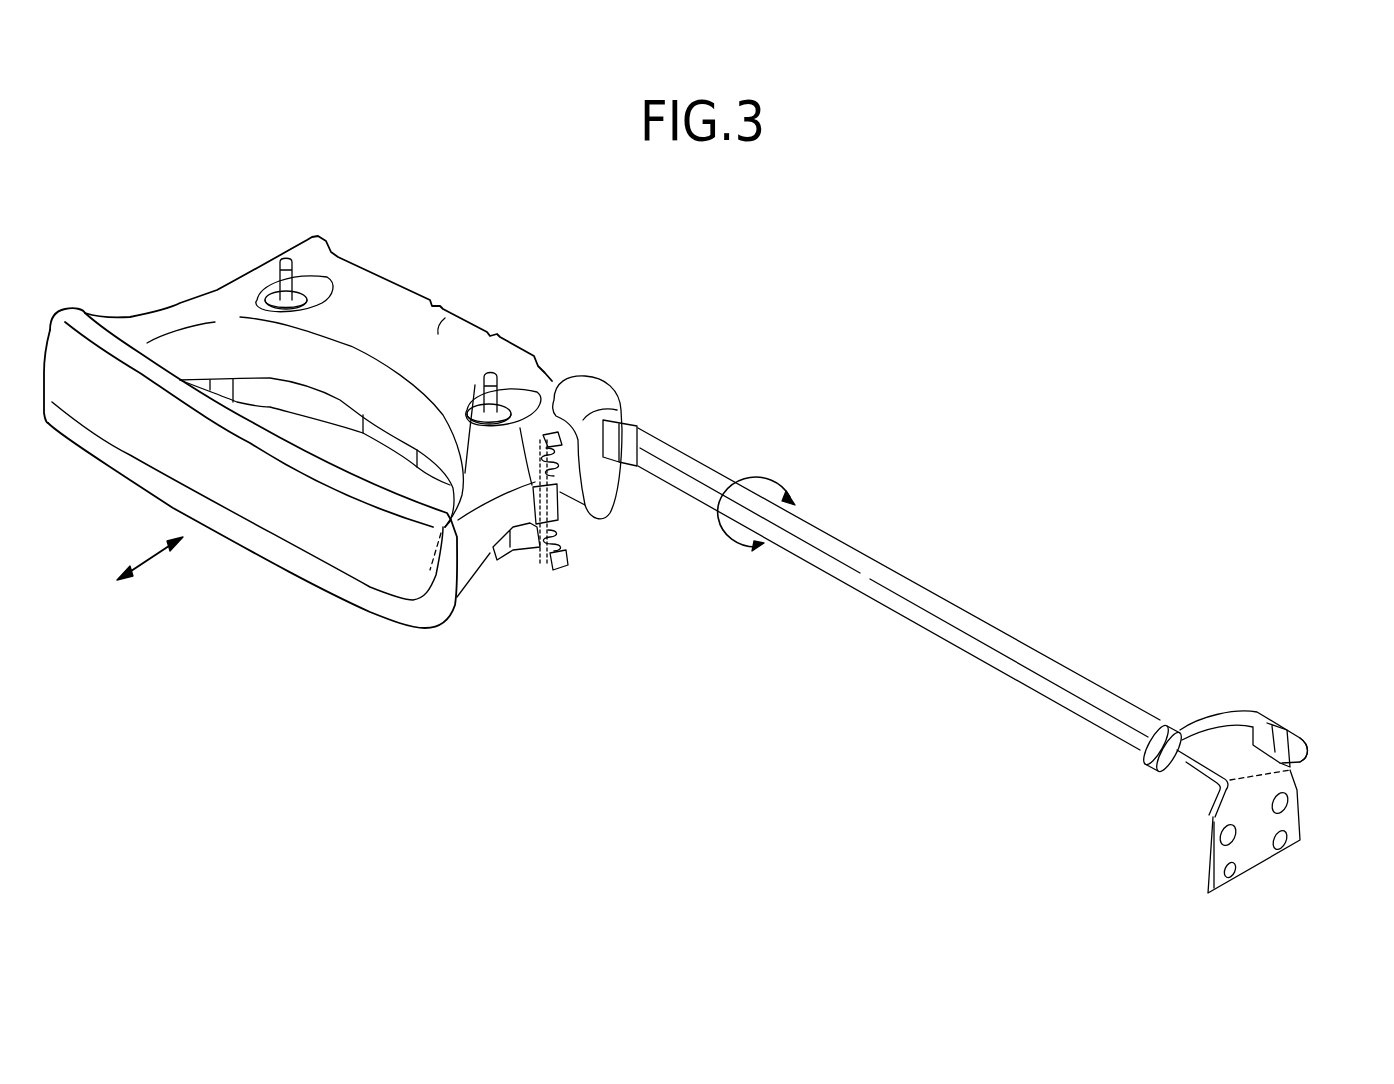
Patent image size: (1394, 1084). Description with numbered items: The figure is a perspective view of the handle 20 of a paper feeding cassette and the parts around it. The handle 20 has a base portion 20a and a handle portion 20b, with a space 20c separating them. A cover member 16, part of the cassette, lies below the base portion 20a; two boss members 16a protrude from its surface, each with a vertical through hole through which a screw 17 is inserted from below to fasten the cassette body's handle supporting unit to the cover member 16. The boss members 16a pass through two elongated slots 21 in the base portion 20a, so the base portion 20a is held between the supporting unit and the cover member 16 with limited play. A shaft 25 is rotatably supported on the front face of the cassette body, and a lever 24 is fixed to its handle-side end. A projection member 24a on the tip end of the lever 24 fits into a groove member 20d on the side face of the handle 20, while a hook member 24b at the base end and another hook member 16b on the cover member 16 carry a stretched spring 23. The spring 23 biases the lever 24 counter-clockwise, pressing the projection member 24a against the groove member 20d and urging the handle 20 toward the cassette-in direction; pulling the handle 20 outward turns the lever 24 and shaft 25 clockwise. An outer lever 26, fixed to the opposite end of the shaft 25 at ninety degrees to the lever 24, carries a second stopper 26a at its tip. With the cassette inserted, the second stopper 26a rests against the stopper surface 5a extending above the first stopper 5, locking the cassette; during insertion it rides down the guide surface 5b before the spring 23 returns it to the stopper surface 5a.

The first stopper 5 is at (1300, 840).
The stopper surface 5a is at (1273, 727).
The guide surface 5b is at (1207, 797).
The cover member 16 is at (507, 553).
The boss member 16a is at (266, 298).
The hook member 16b is at (557, 567).
The screw 17 is at (278, 272).
The handle 20 is at (298, 432).
The base portion 20a is at (445, 323).
The handle portion 20b is at (290, 537).
The space 20c is at (320, 440).
The groove member 20d is at (570, 528).
The elongated slot 21 is at (307, 270).
The spring 23 is at (568, 540).
The lever 24 is at (593, 390).
The projection member 24a is at (560, 492).
The hook member 24b is at (587, 417).
The shaft 25 is at (947, 602).
The outer lever 26 is at (1227, 720).
The second stopper 26a is at (1307, 747).